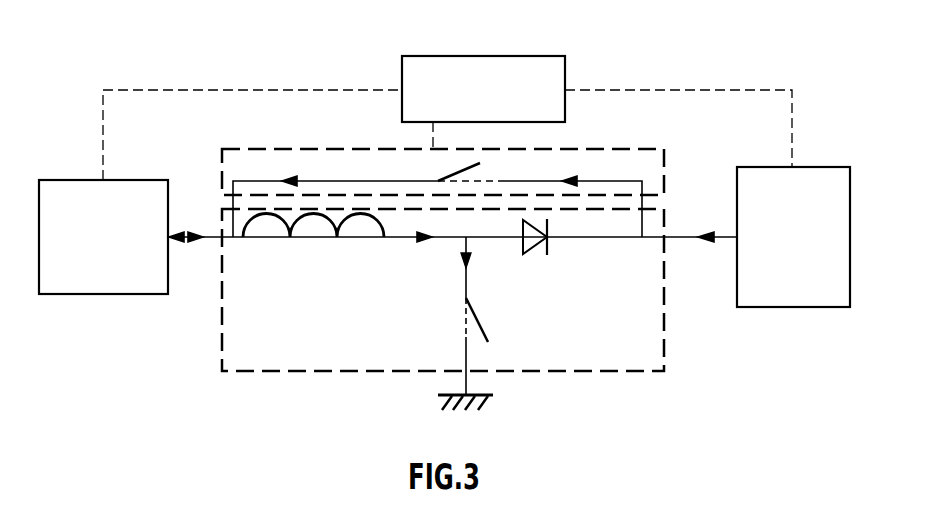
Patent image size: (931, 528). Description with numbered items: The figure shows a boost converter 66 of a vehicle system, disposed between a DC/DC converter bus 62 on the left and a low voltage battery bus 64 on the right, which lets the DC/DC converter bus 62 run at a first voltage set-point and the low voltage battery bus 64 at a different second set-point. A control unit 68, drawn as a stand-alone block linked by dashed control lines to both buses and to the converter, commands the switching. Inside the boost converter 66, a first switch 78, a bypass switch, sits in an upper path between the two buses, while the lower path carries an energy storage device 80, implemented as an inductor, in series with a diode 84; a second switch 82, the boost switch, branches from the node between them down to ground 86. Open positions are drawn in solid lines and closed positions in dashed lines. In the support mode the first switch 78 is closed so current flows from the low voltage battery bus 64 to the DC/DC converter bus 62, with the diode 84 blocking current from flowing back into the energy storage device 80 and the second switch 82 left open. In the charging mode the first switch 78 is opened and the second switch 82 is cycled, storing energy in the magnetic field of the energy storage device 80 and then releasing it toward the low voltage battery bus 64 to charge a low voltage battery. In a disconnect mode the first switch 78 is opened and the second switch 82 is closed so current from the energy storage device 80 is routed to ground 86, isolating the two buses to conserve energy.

The DC/DC converter bus 62 is at (130, 180).
The low voltage battery bus 64 is at (765, 167).
The boost converter 66 is at (303, 372).
The control unit 68 is at (567, 73).
The first switch 78 is at (449, 174).
The energy storage device 80 is at (316, 234).
The second switch 82 is at (481, 324).
The diode 84 is at (539, 260).
The ground 86 is at (486, 405).